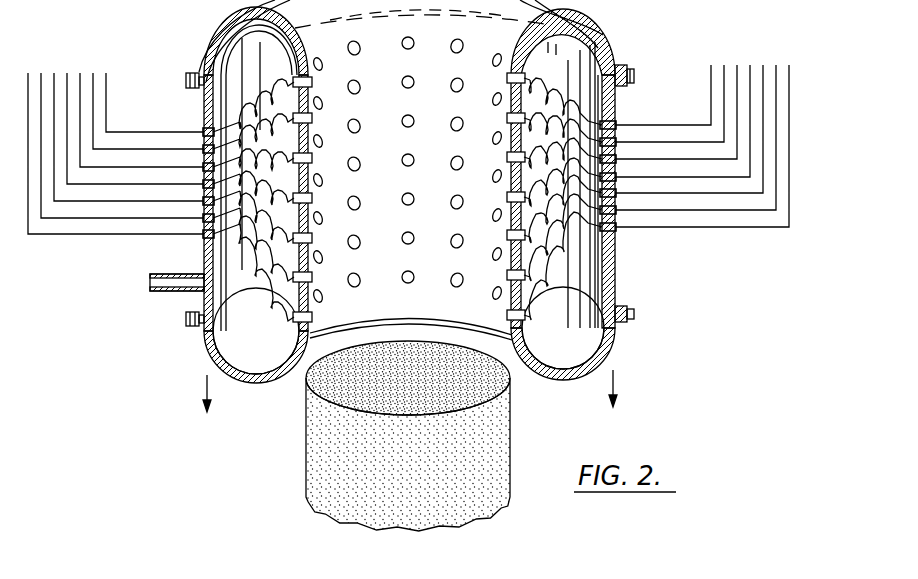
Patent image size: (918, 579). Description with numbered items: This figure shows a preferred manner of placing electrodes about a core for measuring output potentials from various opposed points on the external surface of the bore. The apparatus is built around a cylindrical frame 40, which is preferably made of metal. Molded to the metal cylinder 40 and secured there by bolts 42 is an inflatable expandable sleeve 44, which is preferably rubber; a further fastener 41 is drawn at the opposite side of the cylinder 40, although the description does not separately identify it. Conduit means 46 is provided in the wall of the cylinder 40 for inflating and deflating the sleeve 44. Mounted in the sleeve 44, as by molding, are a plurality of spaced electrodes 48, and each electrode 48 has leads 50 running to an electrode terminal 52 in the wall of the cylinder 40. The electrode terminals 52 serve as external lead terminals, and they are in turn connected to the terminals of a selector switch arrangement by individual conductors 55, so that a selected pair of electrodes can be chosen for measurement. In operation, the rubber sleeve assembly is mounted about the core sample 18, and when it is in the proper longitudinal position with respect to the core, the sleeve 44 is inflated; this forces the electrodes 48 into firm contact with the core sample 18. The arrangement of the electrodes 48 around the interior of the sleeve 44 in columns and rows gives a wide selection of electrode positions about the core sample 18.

The core sample 18 is at (512, 410).
The cylindrical frame 40 is at (614, 262).
The bolt 41 is at (633, 73).
The bolts 42 is at (198, 92).
The inflatable expandable sleeve 44 is at (597, 22).
The conduit means 46 is at (188, 292).
The electrodes 48 is at (411, 40).
The leads 50 is at (277, 298).
The electrode terminal 52 is at (203, 237).
The conductors 55 is at (737, 227).